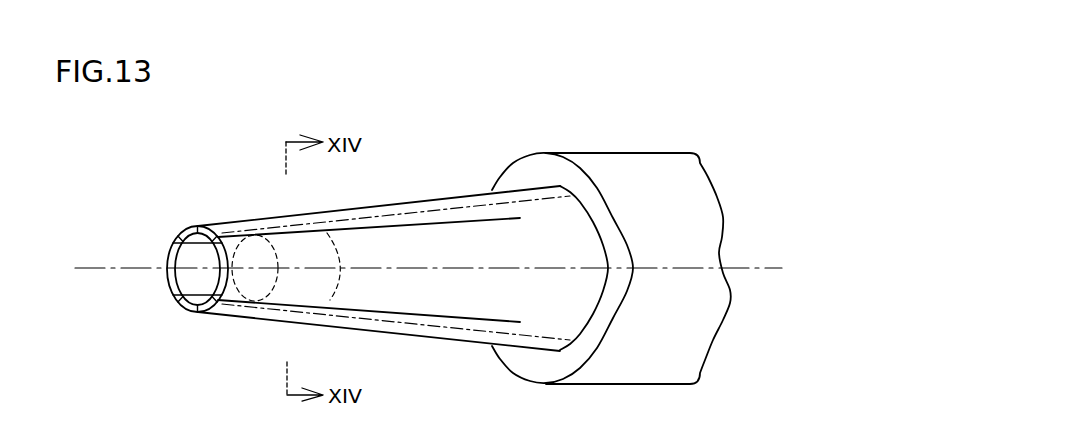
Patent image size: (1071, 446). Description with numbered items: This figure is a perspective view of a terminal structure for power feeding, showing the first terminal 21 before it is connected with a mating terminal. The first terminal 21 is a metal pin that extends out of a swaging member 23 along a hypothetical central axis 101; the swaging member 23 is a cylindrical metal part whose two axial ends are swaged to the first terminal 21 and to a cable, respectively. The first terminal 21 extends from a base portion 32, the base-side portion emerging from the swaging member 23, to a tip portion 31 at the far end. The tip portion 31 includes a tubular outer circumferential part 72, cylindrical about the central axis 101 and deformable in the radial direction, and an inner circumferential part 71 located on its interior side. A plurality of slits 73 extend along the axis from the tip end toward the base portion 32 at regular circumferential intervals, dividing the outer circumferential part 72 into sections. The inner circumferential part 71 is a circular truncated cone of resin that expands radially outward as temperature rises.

The central axis 101 is at (763, 267).
The first terminal 21 is at (430, 180).
The swaging member 23 is at (639, 165).
The tip portion 31 is at (290, 317).
The base portion 32 is at (548, 330).
The inner circumferential part 71 is at (335, 293).
The outer circumferential part 72 is at (461, 340).
The slits 73 is at (425, 318).